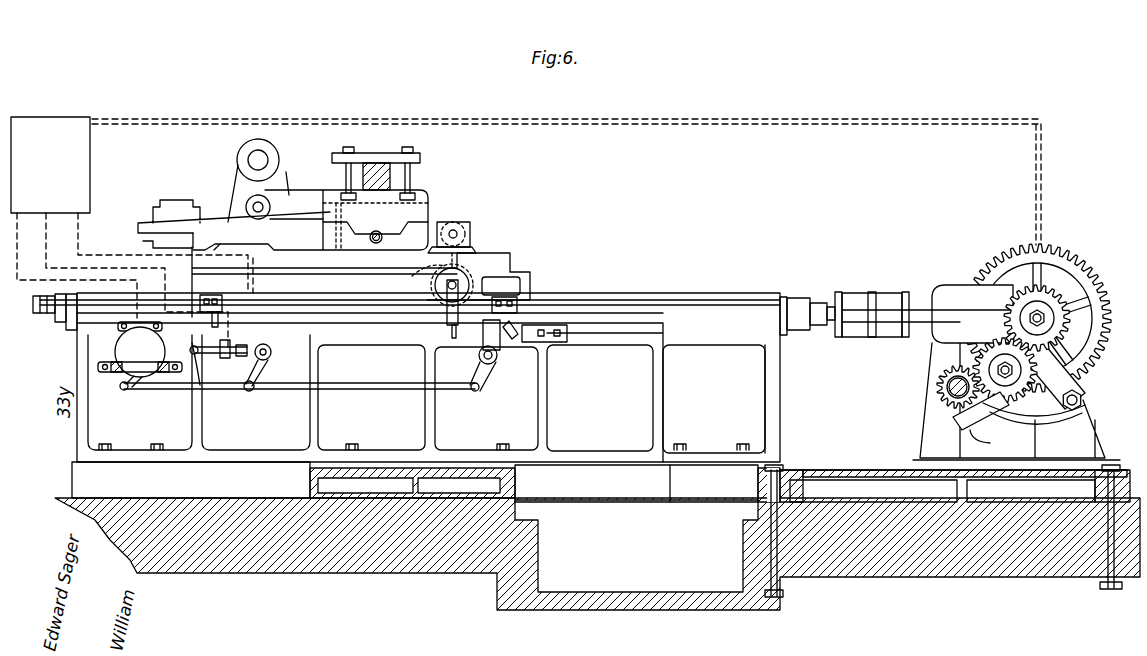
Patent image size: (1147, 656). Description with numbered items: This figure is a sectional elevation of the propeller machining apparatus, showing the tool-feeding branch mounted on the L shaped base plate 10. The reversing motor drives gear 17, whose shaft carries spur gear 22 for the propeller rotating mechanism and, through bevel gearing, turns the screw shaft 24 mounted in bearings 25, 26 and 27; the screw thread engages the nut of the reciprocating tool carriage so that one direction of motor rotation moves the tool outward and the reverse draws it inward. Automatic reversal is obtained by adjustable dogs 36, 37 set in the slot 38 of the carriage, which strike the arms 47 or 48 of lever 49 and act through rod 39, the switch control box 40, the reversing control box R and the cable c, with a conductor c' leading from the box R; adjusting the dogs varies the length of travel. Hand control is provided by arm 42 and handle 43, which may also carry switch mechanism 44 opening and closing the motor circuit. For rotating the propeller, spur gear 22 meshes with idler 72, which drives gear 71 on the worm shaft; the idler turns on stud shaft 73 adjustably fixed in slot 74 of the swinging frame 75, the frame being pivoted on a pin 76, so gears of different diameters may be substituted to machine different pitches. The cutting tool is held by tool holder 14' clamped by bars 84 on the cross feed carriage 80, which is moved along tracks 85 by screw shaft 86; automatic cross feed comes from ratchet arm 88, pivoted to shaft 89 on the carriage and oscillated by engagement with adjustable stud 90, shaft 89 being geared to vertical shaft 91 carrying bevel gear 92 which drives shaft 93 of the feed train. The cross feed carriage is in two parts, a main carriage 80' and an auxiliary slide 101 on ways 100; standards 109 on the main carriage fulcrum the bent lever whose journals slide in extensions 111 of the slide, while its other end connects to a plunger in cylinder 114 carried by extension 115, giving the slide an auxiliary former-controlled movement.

The L shaped base plate 10 is at (875, 458).
The gear 17 is at (1063, 260).
The spur gear 22 is at (1057, 317).
The screw shaft 24 is at (917, 300).
The bearing 25 is at (947, 290).
The bearing 26 is at (802, 300).
The bearing 27 is at (72, 332).
The adjustable dog 36 is at (213, 323).
The adjustable dog 37 is at (517, 302).
The slot 38 is at (328, 304).
The rod 39 is at (372, 390).
The switch control box 40 is at (140, 362).
The arm 42 is at (257, 370).
The handle 43 is at (197, 365).
The switch mechanism 44 is at (225, 360).
The arm of lever 47 is at (482, 357).
The arm of lever 48 is at (510, 342).
The lever 49 is at (486, 370).
The gear 71 is at (942, 384).
The idler 72 is at (1023, 375).
The stud shaft 73 is at (1003, 365).
The slot 74 is at (975, 437).
The swinging frame 75 is at (1047, 355).
The pivot pin 76 is at (1083, 406).
The cross feed carriage 80 is at (401, 214).
The main carriage 80' is at (258, 241).
The bars 84 is at (375, 163).
The tracks 85 is at (220, 250).
The screw shaft 86 is at (379, 241).
The ratchet arm 88 is at (450, 312).
The shaft 89 is at (458, 282).
The adjustable stud 90 is at (555, 324).
The vertical shaft 91 is at (419, 279).
The bevel gear 92 is at (473, 242).
The shaft 93 is at (472, 224).
The ways 100 is at (338, 240).
The auxiliary slide 101 is at (430, 200).
The standards 109 is at (239, 153).
The extensions of slide 111 is at (297, 198).
The cylinder 114 is at (153, 245).
The extension of carriage 115 is at (143, 218).
The tool holder 14' is at (415, 167).
The reversing control box R is at (50, 165).
The cable c is at (566, 168).
The conductor c' is at (77, 265).